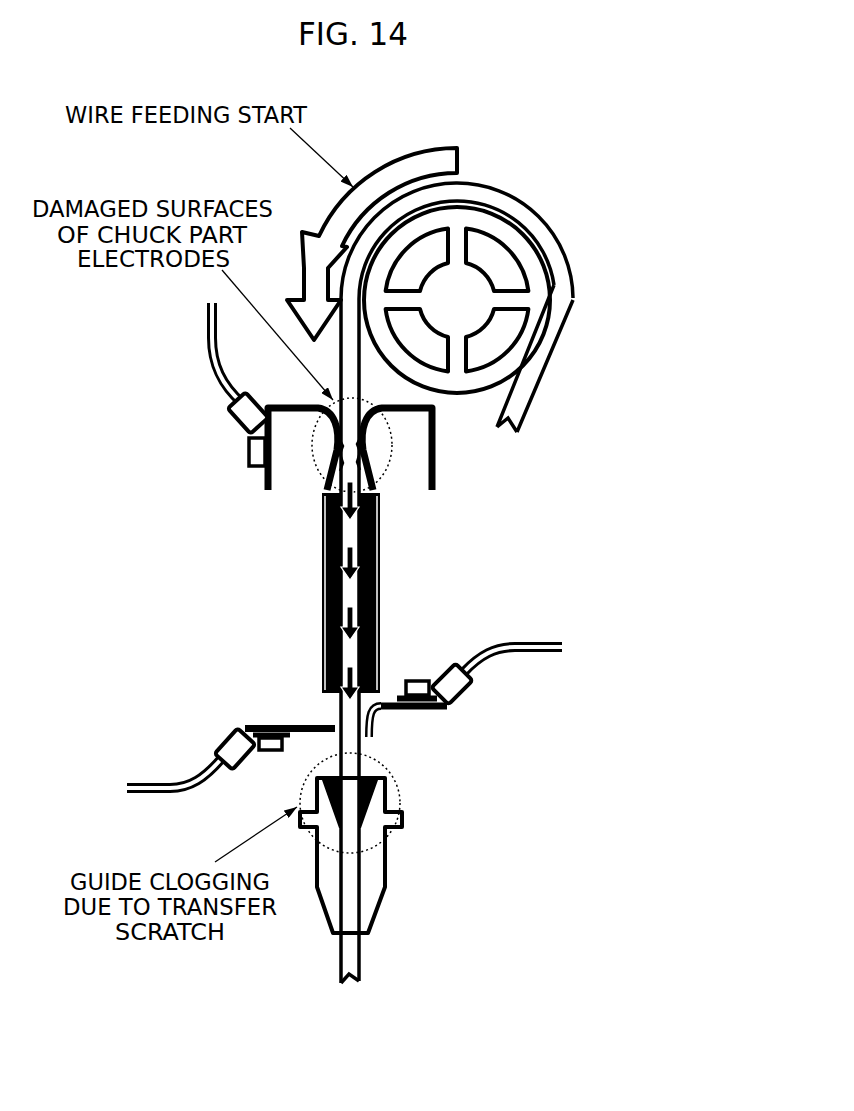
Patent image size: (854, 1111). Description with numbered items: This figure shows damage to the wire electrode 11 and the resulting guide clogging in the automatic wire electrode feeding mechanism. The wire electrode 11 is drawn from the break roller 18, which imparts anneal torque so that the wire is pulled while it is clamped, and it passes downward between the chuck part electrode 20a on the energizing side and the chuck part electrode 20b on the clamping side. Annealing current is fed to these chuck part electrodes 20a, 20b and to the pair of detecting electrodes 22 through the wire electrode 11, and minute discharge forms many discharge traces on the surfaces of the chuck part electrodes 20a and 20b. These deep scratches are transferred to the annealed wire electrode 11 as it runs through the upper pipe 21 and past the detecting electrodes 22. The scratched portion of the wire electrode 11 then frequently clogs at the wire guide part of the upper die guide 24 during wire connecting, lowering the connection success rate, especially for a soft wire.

The wire electrode 11 is at (530, 393).
The break roller 18 is at (457, 223).
The chuck part electrode 20a is at (265, 478).
The chuck part electrode 20b is at (435, 478).
The upper pipe 21 is at (382, 653).
The detecting electrodes 22 is at (380, 707).
The upper die guide 24 is at (385, 888).